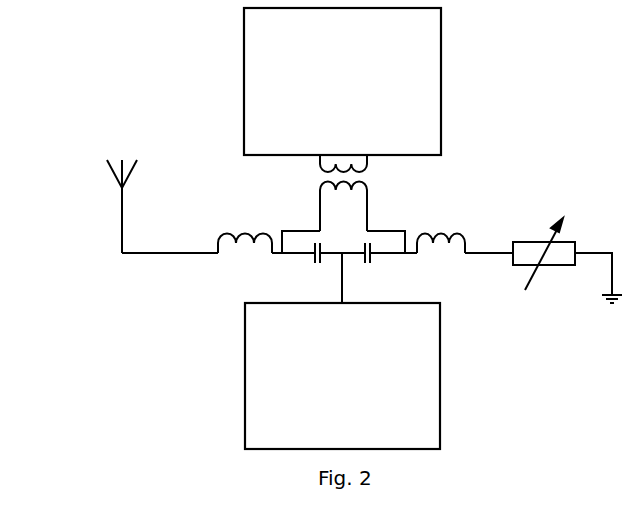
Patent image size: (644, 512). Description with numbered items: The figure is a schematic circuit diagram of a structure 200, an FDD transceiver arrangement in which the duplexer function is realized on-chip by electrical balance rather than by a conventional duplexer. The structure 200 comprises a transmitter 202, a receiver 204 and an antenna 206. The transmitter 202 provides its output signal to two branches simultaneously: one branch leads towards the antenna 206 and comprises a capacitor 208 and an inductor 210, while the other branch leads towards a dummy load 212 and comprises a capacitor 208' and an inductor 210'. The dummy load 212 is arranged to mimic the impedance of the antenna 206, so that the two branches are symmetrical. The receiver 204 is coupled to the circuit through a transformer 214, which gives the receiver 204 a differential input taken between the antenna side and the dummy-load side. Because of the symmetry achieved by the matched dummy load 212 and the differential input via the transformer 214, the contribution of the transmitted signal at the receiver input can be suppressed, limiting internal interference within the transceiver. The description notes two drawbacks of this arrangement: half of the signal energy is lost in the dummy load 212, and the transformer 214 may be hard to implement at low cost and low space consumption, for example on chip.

The structure 200 is at (435, 195).
The transmitter 202 is at (258, 323).
The receiver 204 is at (262, 114).
The antenna 206 is at (122, 188).
The capacitor 208 is at (282, 265).
The capacitor 208' is at (402, 264).
The inductor 210 is at (216, 261).
The inductor 210' is at (462, 269).
The dummy load 212 is at (555, 260).
The transformer 214 is at (340, 172).